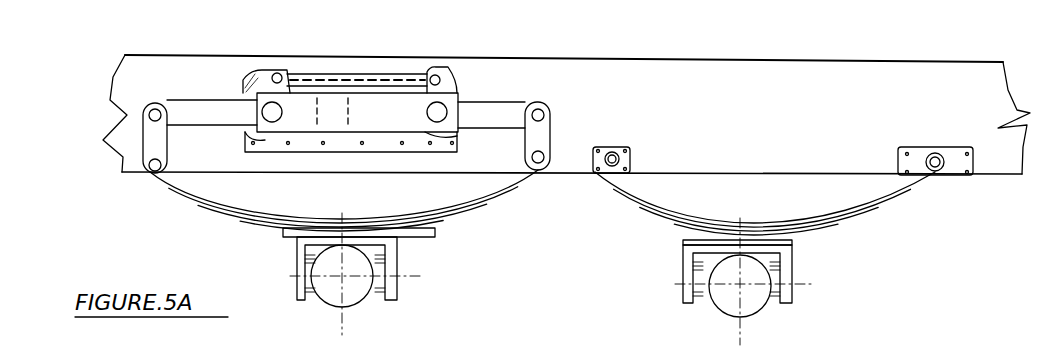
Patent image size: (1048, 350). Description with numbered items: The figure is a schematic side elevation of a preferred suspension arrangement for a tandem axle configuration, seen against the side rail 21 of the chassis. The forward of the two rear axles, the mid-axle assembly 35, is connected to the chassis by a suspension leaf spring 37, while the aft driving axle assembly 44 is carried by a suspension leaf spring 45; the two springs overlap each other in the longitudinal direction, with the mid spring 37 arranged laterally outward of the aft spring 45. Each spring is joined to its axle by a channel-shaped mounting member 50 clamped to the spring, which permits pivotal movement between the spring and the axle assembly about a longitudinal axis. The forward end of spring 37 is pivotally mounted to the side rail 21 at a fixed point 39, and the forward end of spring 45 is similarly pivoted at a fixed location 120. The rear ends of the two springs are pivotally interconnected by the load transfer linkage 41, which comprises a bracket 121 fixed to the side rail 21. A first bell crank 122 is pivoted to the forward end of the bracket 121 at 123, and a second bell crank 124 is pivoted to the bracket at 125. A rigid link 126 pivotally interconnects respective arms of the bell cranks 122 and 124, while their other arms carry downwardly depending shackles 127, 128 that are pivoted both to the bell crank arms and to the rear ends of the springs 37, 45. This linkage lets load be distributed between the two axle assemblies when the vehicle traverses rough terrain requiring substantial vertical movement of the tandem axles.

The side rail 21 is at (747, 82).
The load transfer linkage 41 is at (318, 63).
The rigid link 126 is at (357, 77).
The pivot 125 is at (433, 107).
The pivot 123 is at (272, 122).
The first bell crank 122 is at (238, 95).
The shackle 127 is at (150, 142).
The second bell crank 124 is at (478, 110).
The shackle 128 is at (545, 135).
The bracket 121 is at (308, 143).
The fixed location 120 is at (623, 160).
The forward end pivot point 39 is at (942, 165).
The suspension leaf spring 45 is at (230, 222).
The suspension leaf spring 37 is at (872, 213).
The mounting member 50 is at (400, 258).
The aft driving axle assembly 44 is at (352, 293).
The forward axle assembly 35 is at (753, 303).